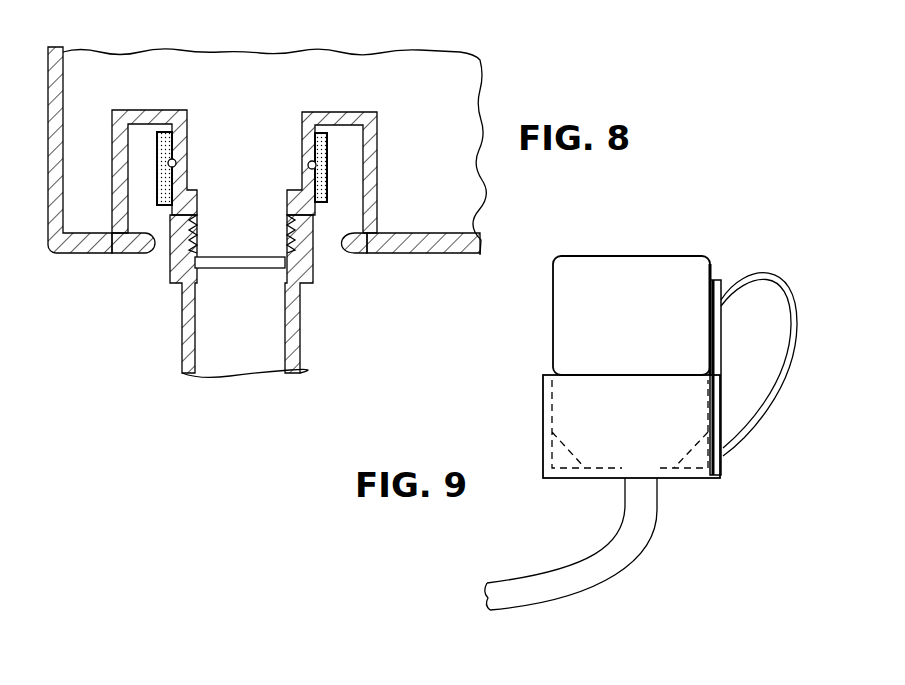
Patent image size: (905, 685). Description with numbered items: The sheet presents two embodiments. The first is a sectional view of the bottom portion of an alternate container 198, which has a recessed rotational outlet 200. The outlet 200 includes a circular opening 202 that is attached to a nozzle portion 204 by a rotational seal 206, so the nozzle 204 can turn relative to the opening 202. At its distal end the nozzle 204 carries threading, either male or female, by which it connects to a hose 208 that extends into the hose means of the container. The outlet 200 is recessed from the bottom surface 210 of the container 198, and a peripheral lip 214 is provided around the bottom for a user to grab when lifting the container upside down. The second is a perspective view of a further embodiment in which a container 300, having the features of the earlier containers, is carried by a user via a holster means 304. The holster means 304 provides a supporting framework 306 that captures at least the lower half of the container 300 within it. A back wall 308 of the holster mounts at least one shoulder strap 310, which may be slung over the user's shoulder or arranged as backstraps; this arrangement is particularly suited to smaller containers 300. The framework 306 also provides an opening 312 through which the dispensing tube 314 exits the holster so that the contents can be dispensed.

In FIG. 8, the container 198 is at (480, 83).
In FIG. 8, the recessed rotational outlet 200 is at (293, 158).
In FIG. 8, the circular opening 202 is at (185, 163).
In FIG. 8, the nozzle portion 204 is at (157, 167).
In FIG. 8, the rotational seal 206 is at (186, 160).
In FIG. 8, the hose 208 is at (302, 308).
In FIG. 8, the bottom surface 210 is at (88, 253).
In FIG. 8, the peripheral lip 214 is at (362, 253).
In FIG. 9, the container 300 is at (625, 254).
In FIG. 9, the holster means 304 is at (698, 482).
In FIG. 9, the supporting framework 306 is at (542, 425).
In FIG. 9, the back wall 308 is at (722, 365).
In FIG. 9, the shoulder strap 310 is at (775, 265).
In FIG. 9, the opening 312 is at (577, 480).
In FIG. 9, the dispensing tube 314 is at (558, 568).